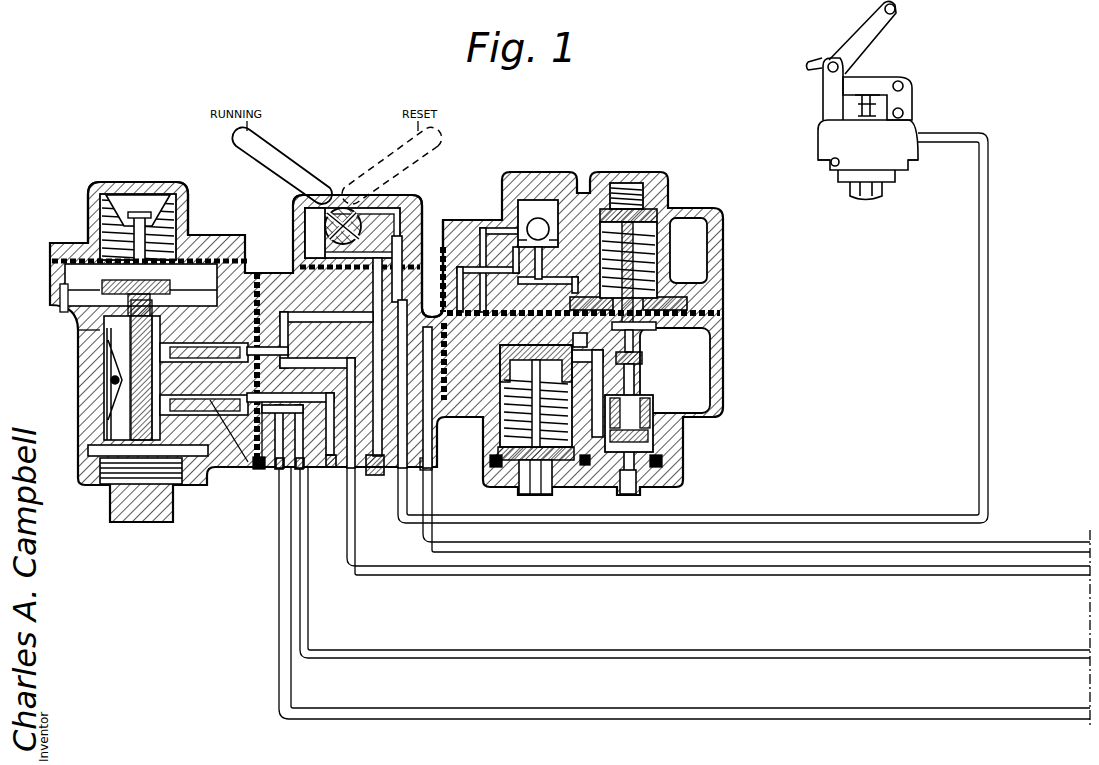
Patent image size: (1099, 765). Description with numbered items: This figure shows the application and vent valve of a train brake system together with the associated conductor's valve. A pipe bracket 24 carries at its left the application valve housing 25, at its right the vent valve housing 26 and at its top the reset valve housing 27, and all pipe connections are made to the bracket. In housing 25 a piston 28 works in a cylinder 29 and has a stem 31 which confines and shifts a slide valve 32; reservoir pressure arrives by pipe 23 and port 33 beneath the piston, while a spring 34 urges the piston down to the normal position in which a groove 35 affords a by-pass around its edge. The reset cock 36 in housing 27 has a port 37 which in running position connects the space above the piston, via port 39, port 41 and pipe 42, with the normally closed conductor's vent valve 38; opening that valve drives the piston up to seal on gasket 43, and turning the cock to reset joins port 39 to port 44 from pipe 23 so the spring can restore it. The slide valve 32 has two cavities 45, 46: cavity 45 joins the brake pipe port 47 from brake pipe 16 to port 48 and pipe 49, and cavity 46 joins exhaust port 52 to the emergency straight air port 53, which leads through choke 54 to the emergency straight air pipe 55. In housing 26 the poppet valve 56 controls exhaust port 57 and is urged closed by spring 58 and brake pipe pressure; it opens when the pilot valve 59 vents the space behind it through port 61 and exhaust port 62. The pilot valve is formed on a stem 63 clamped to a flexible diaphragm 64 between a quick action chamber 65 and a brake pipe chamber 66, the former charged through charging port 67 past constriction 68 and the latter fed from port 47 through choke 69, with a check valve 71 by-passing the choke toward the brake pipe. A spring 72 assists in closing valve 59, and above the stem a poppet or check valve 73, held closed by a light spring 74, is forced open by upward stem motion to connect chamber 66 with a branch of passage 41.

The brake pipe 16 is at (424, 505).
The pipe 23 is at (280, 598).
The pipe bracket 24 is at (290, 275).
The application valve housing 25 is at (80, 372).
The vent valve housing 26 is at (724, 308).
The reset valve housing 27 is at (410, 198).
The piston 28 is at (68, 286).
The cylinder 29 is at (75, 268).
The stem 31 is at (96, 342).
The slide valve 32 is at (150, 330).
The port 33 is at (232, 470).
The spring 34 is at (165, 225).
The groove 35 is at (62, 306).
The reset cock 36 is at (312, 221).
The port 37 is at (348, 208).
The conductor's vent valve 38 is at (863, 100).
The port 39 is at (262, 272).
The port 41 is at (400, 222).
The pipe 42 is at (404, 524).
The gasket 43 is at (90, 252).
The port 44 is at (280, 470).
The cavity 45 is at (113, 340).
The cavity 46 is at (115, 386).
The brake pipe port 47 is at (198, 300).
The port 48 is at (170, 340).
The pipe 49 is at (348, 516).
The exhaust port 52 is at (258, 462).
The emergency straight air port 53 is at (245, 462).
The choke 54 is at (270, 470).
The emergency straight air pipe 55 is at (300, 623).
The poppet valve 56 is at (500, 440).
The exhaust port 57 is at (536, 490).
The spring 58 is at (508, 422).
The pilot valve 59 is at (680, 448).
The port 61 is at (600, 381).
The exhaust port 62 is at (632, 494).
The stem 63 is at (640, 367).
The flexible diaphragm 64 is at (656, 328).
The quick action chamber 65 is at (710, 386).
The brake pipe chamber 66 is at (657, 272).
The charging port 67 is at (620, 291).
The constriction 68 is at (640, 352).
The choke 69 is at (458, 290).
The check valve 71 is at (540, 218).
The spring 72 is at (657, 255).
The poppet or check valve 73 is at (656, 216).
The light spring 74 is at (628, 196).